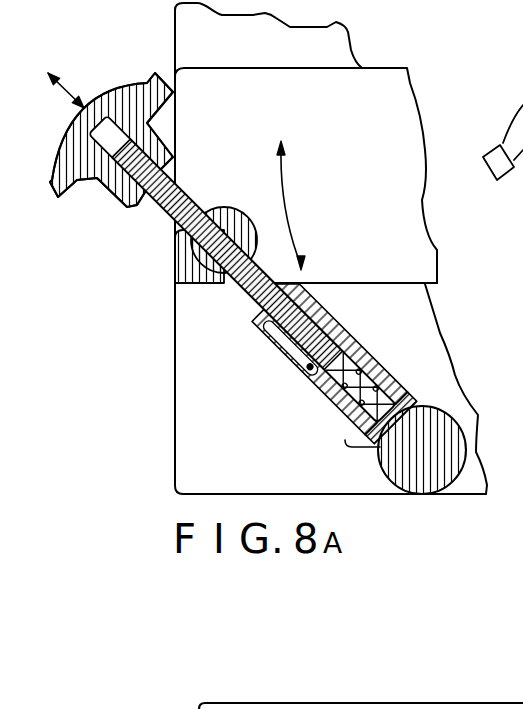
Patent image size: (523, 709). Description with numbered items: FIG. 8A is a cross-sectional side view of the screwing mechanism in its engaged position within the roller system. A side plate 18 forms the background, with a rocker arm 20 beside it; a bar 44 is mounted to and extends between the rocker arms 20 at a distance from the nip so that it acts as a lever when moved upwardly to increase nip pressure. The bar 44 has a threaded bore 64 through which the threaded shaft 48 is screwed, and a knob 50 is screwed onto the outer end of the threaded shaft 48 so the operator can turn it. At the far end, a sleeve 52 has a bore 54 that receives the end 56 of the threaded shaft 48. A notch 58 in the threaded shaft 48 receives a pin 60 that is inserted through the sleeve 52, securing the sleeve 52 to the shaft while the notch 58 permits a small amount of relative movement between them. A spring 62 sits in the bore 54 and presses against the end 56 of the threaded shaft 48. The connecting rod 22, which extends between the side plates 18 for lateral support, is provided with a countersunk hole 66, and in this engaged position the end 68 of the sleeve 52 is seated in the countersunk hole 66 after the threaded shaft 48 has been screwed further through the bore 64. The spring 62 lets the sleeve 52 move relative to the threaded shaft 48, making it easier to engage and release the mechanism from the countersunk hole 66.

The side plate 18 is at (326, 37).
The rocker arm 20 is at (387, 90).
The connecting rod 22 is at (422, 477).
The bar 44 is at (223, 215).
The threaded shaft 48 is at (272, 248).
The knob 50 is at (75, 197).
The sleeve 52 is at (326, 358).
The bore 54 is at (327, 310).
The end of threaded shaft 56 is at (340, 338).
The notch 58 is at (270, 348).
The pin 60 is at (300, 363).
The spring 62 is at (367, 378).
The threaded bore 64 is at (237, 214).
The countersunk hole 66 is at (433, 400).
The end of sleeve 68 is at (373, 438).